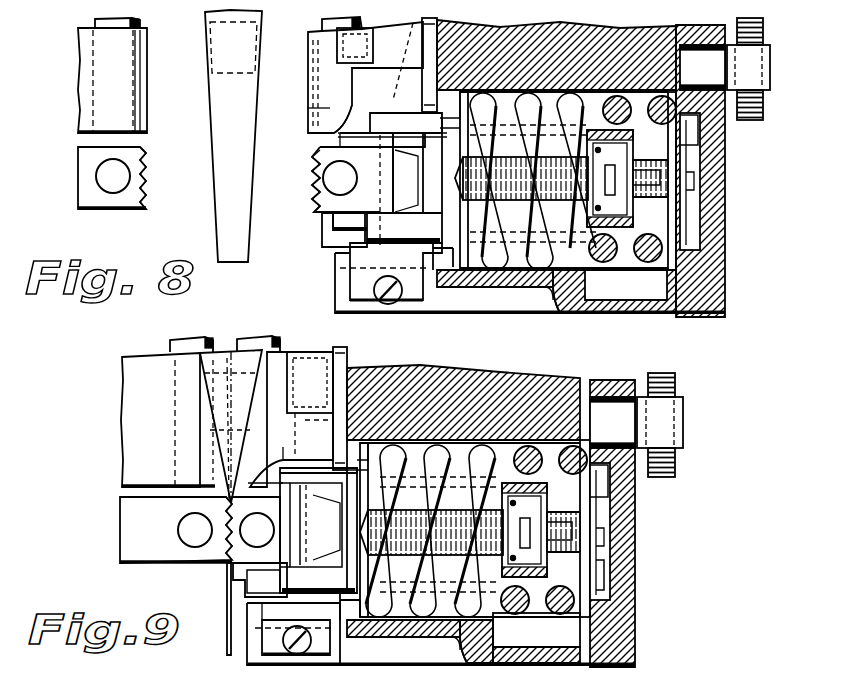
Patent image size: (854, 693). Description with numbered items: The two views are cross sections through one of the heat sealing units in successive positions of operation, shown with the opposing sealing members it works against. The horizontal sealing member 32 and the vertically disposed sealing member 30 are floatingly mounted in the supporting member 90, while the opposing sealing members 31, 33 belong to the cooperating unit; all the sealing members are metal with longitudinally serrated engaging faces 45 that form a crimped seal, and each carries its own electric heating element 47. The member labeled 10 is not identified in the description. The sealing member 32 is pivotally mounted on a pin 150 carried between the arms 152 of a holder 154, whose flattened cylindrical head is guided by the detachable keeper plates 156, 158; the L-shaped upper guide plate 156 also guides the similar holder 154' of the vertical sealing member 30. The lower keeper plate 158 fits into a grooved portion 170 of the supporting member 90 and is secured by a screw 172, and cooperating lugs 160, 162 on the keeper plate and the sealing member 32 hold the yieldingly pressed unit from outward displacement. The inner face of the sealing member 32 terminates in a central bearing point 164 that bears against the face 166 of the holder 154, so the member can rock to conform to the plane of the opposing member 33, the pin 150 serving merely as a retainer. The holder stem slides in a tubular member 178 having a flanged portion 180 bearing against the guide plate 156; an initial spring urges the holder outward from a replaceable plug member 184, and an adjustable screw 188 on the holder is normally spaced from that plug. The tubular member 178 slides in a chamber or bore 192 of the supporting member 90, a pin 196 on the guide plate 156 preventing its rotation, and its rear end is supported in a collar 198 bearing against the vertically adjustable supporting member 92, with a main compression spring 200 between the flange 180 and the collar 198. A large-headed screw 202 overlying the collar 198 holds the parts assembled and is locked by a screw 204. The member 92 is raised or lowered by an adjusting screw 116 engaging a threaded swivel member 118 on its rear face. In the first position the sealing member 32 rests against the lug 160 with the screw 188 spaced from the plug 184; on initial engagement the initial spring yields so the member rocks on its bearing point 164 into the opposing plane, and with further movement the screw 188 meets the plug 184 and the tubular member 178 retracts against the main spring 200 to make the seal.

In FIG. 8, the tapered wedge 10 is at (208, 121).
In FIG. 9, the tapered wedge 10 is at (210, 450).
In FIG. 8, the sealing member 30 is at (326, 84).
In FIG. 9, the sealing member 30 is at (298, 447).
In FIG. 8, the sealing member 31 is at (140, 88).
In FIG. 9, the sealing member 31 is at (126, 395).
In FIG. 8, the sealing member 32 is at (318, 190).
In FIG. 9, the sealing member 32 is at (226, 556).
In FIG. 8, the sealing member 33 is at (128, 203).
In FIG. 9, the sealing member 33 is at (122, 512).
In FIG. 8, the serrated engaging faces 45 is at (150, 173).
In FIG. 9, the serrated engaging faces 45 is at (228, 520).
In FIG. 8, the electric heating element 47 is at (97, 24).
In FIG. 9, the electric heating element 47 is at (175, 341).
In FIG. 8, the supporting member 90 is at (488, 308).
In FIG. 9, the supporting member 90 is at (398, 660).
In FIG. 9, the vertically adjustable supporting member 92 is at (630, 643).
In FIG. 8, the adjusting screw 116 is at (765, 27).
In FIG. 9, the adjusting screw 116 is at (678, 384).
In FIG. 8, the swivel member 118 is at (770, 66).
In FIG. 9, the swivel member 118 is at (686, 426).
In FIG. 8, the pin 150 is at (320, 109).
In FIG. 9, the pin 150 is at (283, 471).
In FIG. 8, the arms 152 is at (340, 124).
In FIG. 8, the holder 154 is at (352, 190).
In FIG. 9, the holder 154 is at (201, 611).
In FIG. 8, the holder 154' is at (349, 58).
In FIG. 9, the holder 154' is at (331, 522).
In FIG. 8, the keeper plate 156 is at (432, 20).
In FIG. 9, the keeper plate 156 is at (352, 341).
In FIG. 8, the keeper plate 158 is at (352, 294).
In FIG. 9, the keeper plate 158 is at (252, 660).
In FIG. 8, the lug 160 is at (330, 230).
In FIG. 9, the lug 160 is at (240, 575).
In FIG. 8, the lug 162 is at (332, 210).
In FIG. 9, the lug 162 is at (248, 596).
In FIG. 8, the central bearing point 164 is at (412, 186).
In FIG. 9, the central bearing point 164 is at (331, 522).
In FIG. 8, the face 166 is at (395, 153).
In FIG. 9, the face 166 is at (335, 545).
In FIG. 9, the grooved portion 170 is at (268, 660).
In FIG. 8, the screw 172 is at (391, 304).
In FIG. 9, the screw 172 is at (300, 655).
In FIG. 8, the tubular member 178 is at (622, 265).
In FIG. 9, the tubular member 178 is at (445, 608).
In FIG. 8, the flanged portion 180 is at (448, 272).
In FIG. 9, the flanged portion 180 is at (347, 628).
In FIG. 8, the plug member 184 is at (615, 183).
In FIG. 9, the plug member 184 is at (560, 528).
In FIG. 8, the adjustable screw 188 is at (603, 200).
In FIG. 9, the adjustable screw 188 is at (518, 543).
In FIG. 8, the chamber or bore 192 is at (552, 92).
In FIG. 9, the chamber or bore 192 is at (507, 447).
In FIG. 8, the pin 196 is at (432, 115).
In FIG. 9, the pin 196 is at (345, 460).
In FIG. 8, the collar 198 is at (672, 270).
In FIG. 9, the collar 198 is at (583, 620).
In FIG. 8, the main compression spring 200 is at (573, 92).
In FIG. 9, the main compression spring 200 is at (512, 617).
In FIG. 8, the screw 202 is at (693, 227).
In FIG. 9, the screw 202 is at (603, 567).
In FIG. 8, the screw 204 is at (693, 148).
In FIG. 9, the screw 204 is at (604, 504).